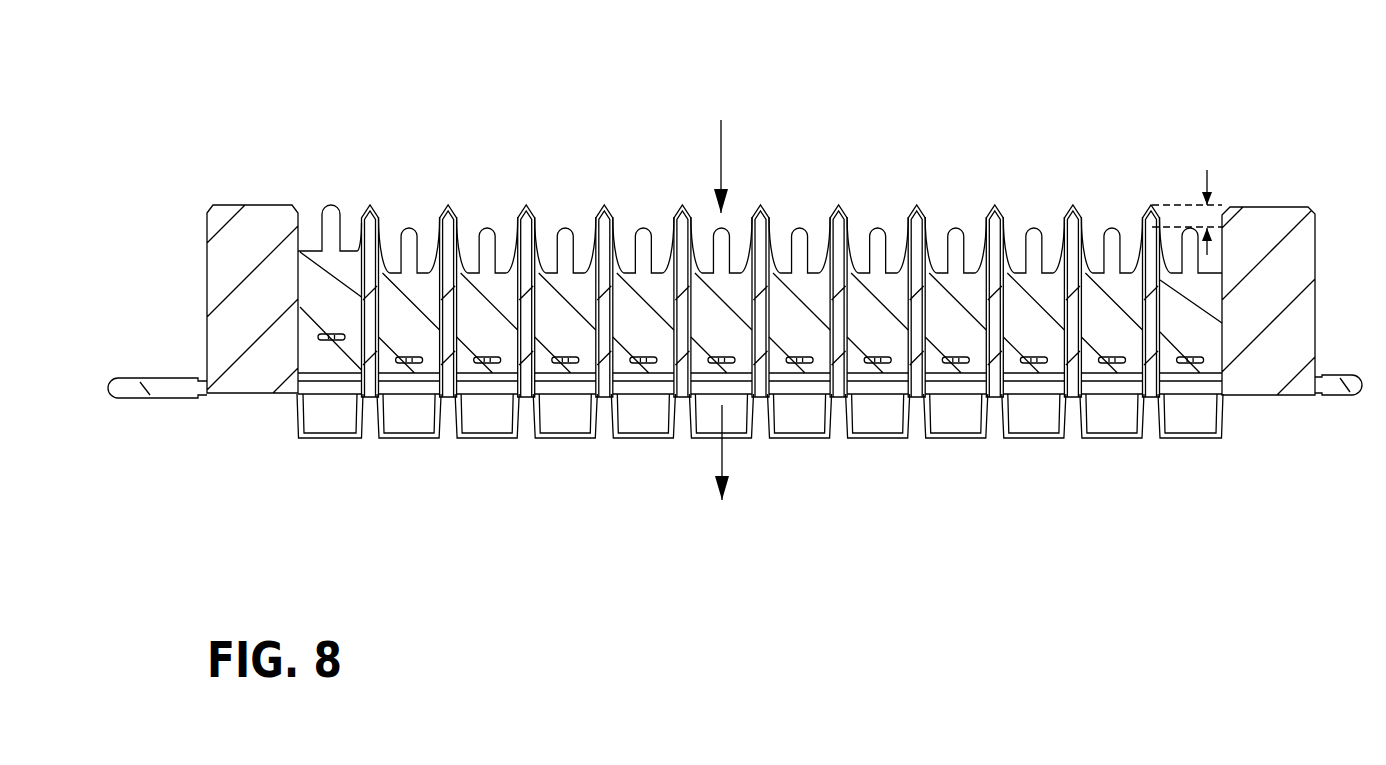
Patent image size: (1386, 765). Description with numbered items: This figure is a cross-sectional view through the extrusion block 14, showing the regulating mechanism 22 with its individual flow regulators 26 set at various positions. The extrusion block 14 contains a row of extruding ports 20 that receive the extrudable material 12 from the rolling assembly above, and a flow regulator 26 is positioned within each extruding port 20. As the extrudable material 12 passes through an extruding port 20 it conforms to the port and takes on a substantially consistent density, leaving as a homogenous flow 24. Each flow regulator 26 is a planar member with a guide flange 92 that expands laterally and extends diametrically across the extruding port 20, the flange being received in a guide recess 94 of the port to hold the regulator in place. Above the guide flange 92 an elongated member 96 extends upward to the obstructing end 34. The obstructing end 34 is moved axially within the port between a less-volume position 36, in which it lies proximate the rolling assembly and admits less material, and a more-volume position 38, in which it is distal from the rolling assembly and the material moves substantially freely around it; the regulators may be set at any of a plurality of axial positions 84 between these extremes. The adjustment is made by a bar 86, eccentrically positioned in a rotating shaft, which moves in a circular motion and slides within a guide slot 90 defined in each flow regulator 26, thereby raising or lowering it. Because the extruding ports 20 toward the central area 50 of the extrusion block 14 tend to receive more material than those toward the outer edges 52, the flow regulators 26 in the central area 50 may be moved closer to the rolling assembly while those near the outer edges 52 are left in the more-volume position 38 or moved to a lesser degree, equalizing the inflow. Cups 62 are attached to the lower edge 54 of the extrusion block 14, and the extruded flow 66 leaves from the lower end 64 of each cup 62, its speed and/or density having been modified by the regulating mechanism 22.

The extrudable material 12 is at (712, 145).
The extrusion block 14 is at (178, 218).
The extruding port 20 is at (873, 202).
The regulating mechanism 22 is at (1088, 178).
The flow 24 is at (722, 155).
The flow regulator 26 is at (570, 297).
The obstructing end 34 is at (407, 228).
The less-volume position 36 is at (312, 198).
The more-volume position 38 is at (955, 218).
The central area 50 is at (677, 457).
The outer edges 52 is at (328, 448).
The lower edge 54 is at (238, 395).
The cup 62 is at (1033, 412).
The lower end 64 is at (952, 438).
The extruded flow 66 is at (723, 452).
The plurality of axial positions 84 is at (1207, 170).
The bar 86 is at (405, 362).
The guide slot 90 is at (565, 362).
The guide flange 92 is at (1138, 323).
The guide recess 94 is at (612, 250).
The elongated member 96 is at (1040, 250).